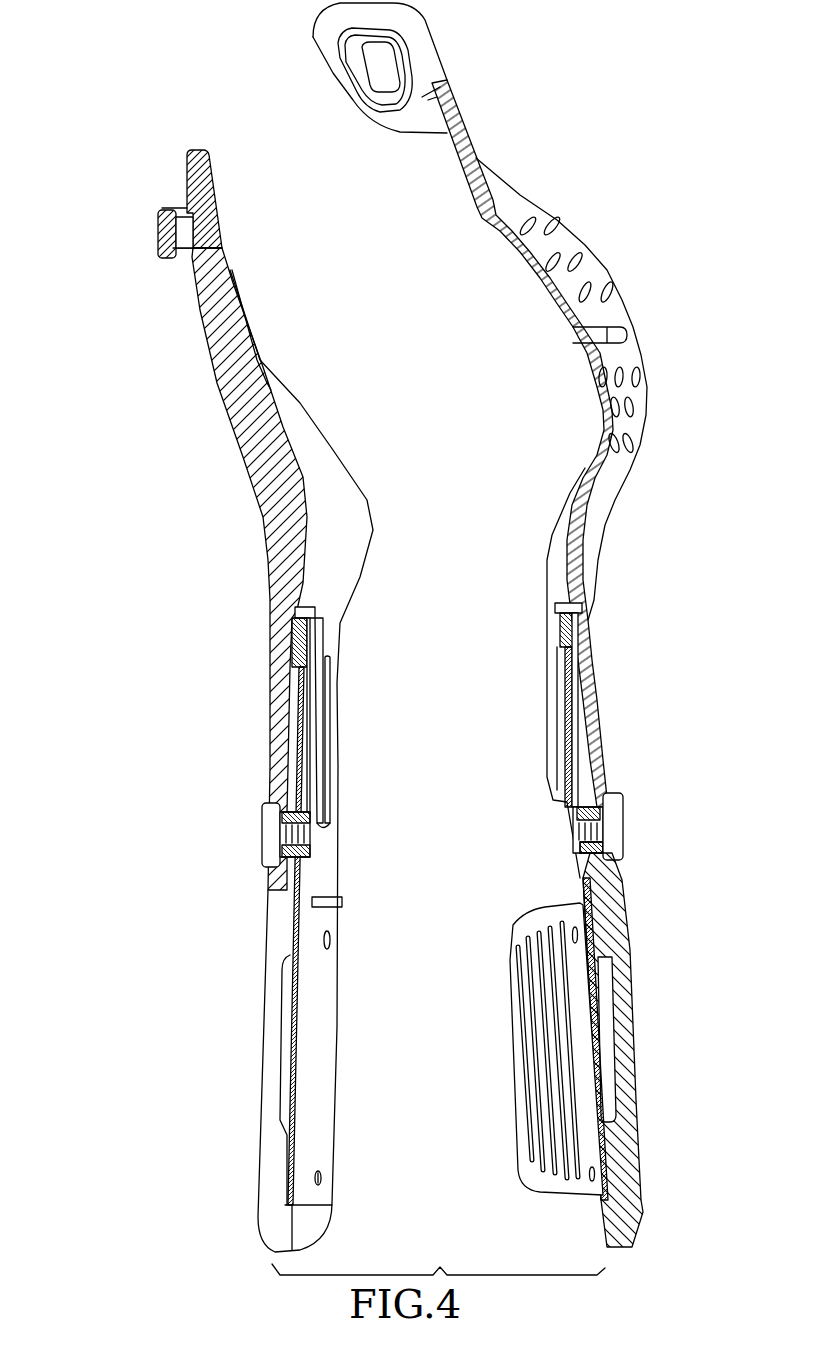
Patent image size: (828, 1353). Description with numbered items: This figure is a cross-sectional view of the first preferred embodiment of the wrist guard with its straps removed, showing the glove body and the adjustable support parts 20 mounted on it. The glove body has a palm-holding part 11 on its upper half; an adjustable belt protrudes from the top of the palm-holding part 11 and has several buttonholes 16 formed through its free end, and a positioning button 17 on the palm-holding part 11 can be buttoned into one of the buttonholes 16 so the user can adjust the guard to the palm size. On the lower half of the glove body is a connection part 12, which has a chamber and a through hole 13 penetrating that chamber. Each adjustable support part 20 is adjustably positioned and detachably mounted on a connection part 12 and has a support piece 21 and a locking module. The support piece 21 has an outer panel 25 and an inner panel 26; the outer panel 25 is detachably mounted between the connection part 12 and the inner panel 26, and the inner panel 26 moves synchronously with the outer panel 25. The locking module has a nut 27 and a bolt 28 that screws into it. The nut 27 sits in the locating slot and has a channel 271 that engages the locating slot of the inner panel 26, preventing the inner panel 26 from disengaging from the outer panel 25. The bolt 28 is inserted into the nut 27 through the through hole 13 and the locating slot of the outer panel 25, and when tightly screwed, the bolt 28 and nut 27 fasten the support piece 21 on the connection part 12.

The palm-holding part 11 is at (528, 182).
The connection part 12 is at (330, 680).
The through hole 13 is at (598, 848).
The buttonholes 16 is at (390, 67).
The positioning button 17 is at (158, 227).
The adjustable support part 20 is at (262, 950).
The support piece 21 is at (503, 1005).
The outer panel 25 is at (623, 985).
The inner panel 26 is at (580, 883).
The nut 27 is at (283, 815).
The channel 271 is at (300, 855).
The bolt 28 is at (622, 817).